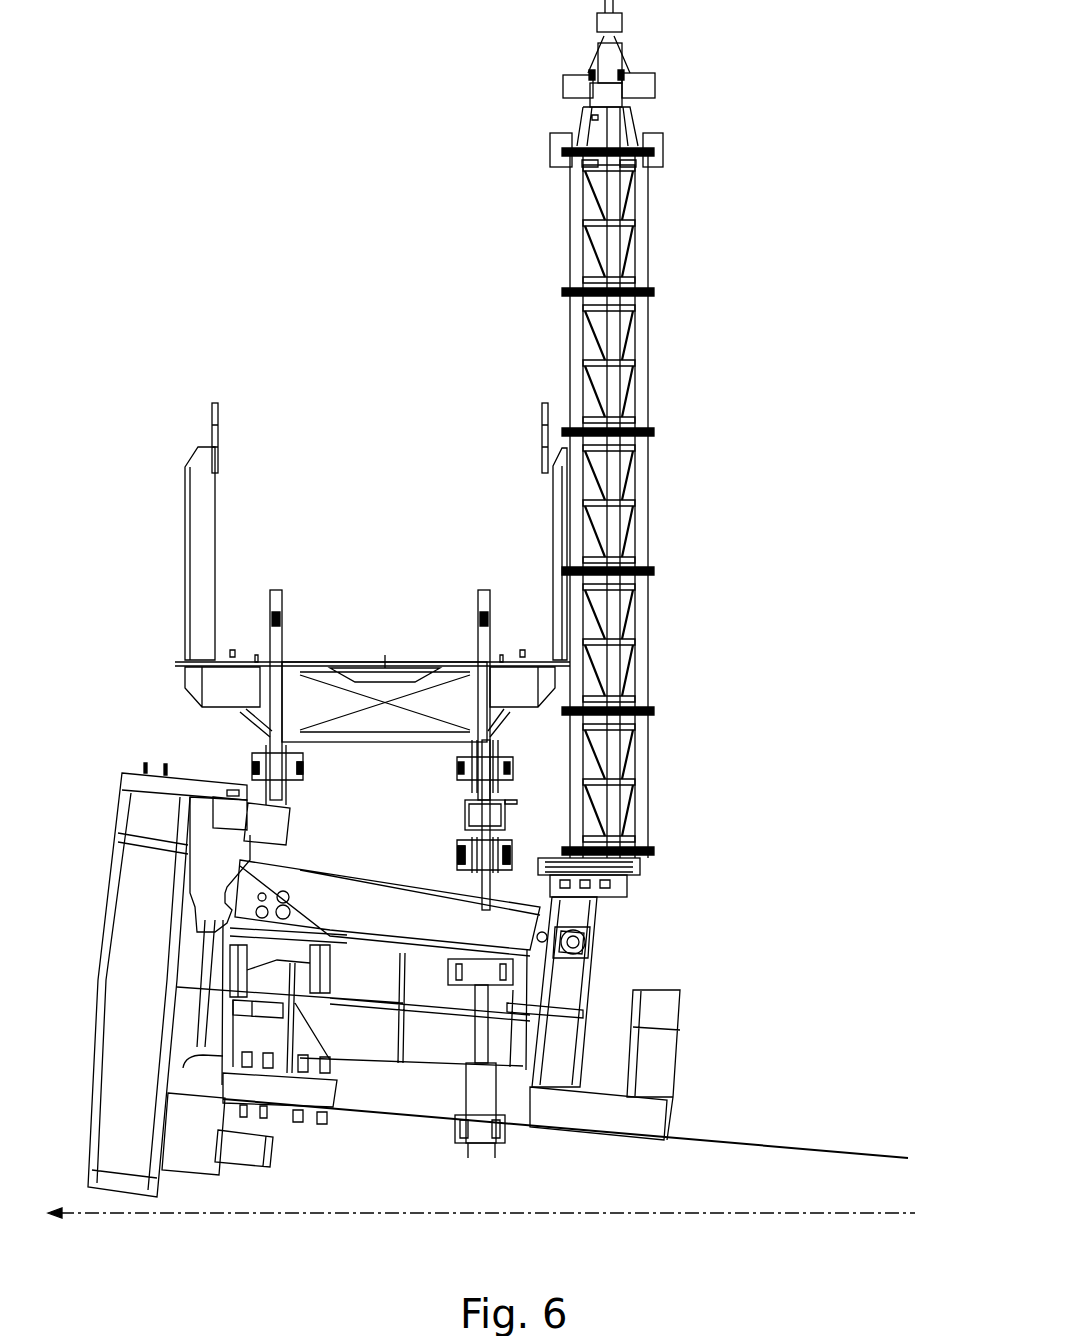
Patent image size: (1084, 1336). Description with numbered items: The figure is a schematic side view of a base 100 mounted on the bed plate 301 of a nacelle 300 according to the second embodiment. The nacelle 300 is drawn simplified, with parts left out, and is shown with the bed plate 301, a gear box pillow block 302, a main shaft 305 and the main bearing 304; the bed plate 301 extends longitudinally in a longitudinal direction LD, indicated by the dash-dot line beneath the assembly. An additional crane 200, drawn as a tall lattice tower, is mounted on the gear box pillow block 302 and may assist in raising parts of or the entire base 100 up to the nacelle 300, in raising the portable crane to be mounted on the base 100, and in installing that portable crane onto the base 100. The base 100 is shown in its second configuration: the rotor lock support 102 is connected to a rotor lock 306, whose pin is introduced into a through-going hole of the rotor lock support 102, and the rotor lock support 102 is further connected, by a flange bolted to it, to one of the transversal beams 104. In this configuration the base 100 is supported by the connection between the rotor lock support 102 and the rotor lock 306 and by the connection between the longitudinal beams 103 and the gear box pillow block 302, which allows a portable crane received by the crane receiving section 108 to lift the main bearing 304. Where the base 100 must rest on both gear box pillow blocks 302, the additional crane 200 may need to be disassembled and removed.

The additional crane 200 is at (717, 360).
The base 100 is at (145, 652).
The crane receiving section 108 is at (370, 578).
The transversal beam 104 is at (262, 822).
The rotor lock support 102 is at (208, 790).
The longitudinal beam 103 is at (422, 918).
The nacelle 300 is at (541, 1087).
The gear box pillow block 302 is at (575, 973).
The bed plate 301 is at (740, 1145).
The main shaft 305 is at (378, 1040).
The main bearing 304 is at (298, 1090).
The rotor lock 306 is at (237, 1152).
The longitudinal direction LD is at (487, 1213).